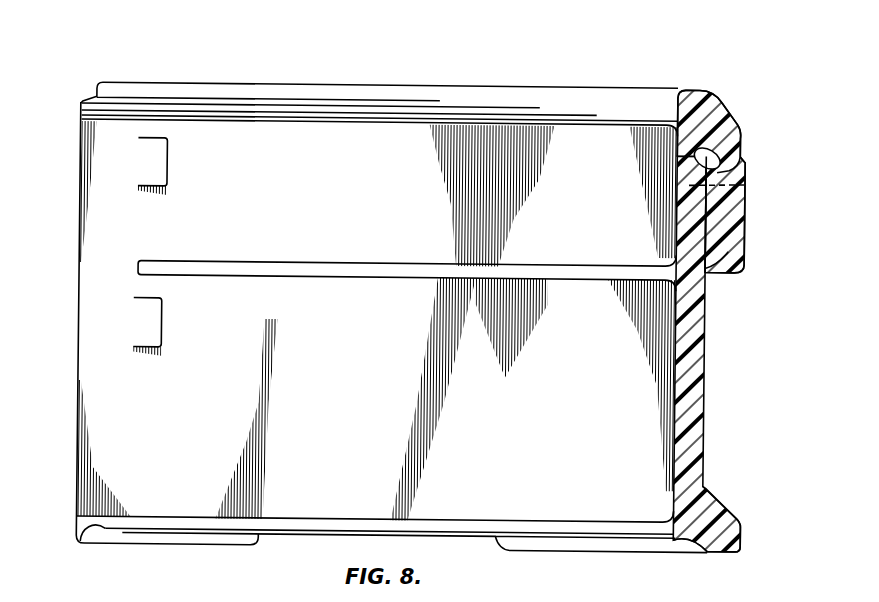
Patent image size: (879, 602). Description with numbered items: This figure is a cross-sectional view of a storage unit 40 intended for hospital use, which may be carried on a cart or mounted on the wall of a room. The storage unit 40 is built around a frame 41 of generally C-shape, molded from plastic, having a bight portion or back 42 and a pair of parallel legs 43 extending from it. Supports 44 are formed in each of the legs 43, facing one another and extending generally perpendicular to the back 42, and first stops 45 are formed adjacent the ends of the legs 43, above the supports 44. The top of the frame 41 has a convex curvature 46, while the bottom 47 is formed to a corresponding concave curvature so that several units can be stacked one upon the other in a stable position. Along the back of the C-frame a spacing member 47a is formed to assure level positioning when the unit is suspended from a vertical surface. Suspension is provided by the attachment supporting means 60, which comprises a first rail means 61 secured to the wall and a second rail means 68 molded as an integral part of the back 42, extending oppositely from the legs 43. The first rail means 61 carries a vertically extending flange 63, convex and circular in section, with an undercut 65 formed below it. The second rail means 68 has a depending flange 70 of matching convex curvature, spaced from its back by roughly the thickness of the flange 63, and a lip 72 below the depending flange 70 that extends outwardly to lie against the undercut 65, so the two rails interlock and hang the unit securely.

The storage unit 40 is at (380, 44).
The frame 41 is at (467, 79).
The back 42 is at (676, 336).
The legs 43 is at (95, 263).
The supports 44 is at (393, 266).
The first stops 45 is at (168, 162).
The convex curvature 46 is at (152, 82).
The bottom 47 is at (108, 532).
The spacing member 47a is at (715, 497).
The attachment supporting means 60 is at (750, 104).
The first rail means 61 is at (754, 198).
The vertically extending flange 63 is at (749, 172).
The undercut 65 is at (738, 227).
The second rail means 68 is at (725, 92).
The depending flange 70 is at (730, 147).
The lip 72 is at (704, 265).